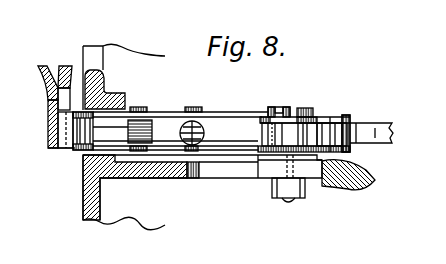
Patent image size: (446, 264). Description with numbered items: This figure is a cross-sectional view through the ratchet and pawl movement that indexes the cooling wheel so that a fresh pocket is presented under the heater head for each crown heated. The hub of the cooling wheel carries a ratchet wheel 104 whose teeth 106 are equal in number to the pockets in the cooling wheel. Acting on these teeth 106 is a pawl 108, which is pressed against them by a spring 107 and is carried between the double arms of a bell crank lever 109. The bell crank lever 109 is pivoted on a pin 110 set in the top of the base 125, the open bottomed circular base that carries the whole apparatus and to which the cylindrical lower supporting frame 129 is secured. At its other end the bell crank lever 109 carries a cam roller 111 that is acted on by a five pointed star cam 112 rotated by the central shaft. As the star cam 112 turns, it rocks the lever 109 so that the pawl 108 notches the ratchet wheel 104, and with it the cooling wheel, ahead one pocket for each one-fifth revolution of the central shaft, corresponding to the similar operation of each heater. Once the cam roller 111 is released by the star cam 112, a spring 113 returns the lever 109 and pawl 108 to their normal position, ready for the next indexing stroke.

The ratchet wheel 104 is at (49, 99).
The teeth 106 is at (68, 82).
The spring 107 is at (93, 132).
The pawl 108 is at (73, 134).
The bell crank lever 109 is at (231, 146).
The pin 110 is at (300, 106).
The cam roller 111 is at (346, 126).
The five pointed star cam 112 is at (378, 145).
The spring 113 is at (201, 125).
The base 125 is at (83, 188).
The lower supporting frame 129 is at (104, 74).